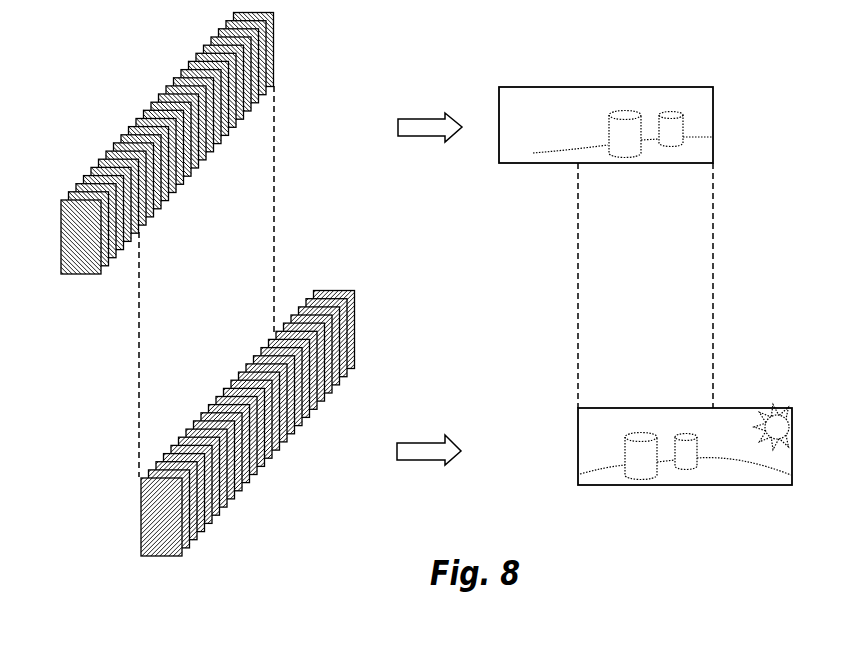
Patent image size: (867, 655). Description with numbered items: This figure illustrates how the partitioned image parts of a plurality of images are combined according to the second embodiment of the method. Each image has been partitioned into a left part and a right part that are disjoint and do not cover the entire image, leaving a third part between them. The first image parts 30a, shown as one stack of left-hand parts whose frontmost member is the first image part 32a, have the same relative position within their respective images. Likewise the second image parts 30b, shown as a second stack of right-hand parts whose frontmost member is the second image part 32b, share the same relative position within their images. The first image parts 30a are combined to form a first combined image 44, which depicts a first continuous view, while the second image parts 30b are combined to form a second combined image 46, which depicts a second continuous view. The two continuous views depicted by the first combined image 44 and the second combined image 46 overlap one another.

The first image parts 30a is at (113, 77).
The first image part 32a is at (78, 273).
The second image parts 30b is at (307, 460).
The second image part 32b is at (160, 556).
The first combined image 44 is at (591, 86).
The second combined image 46 is at (675, 408).